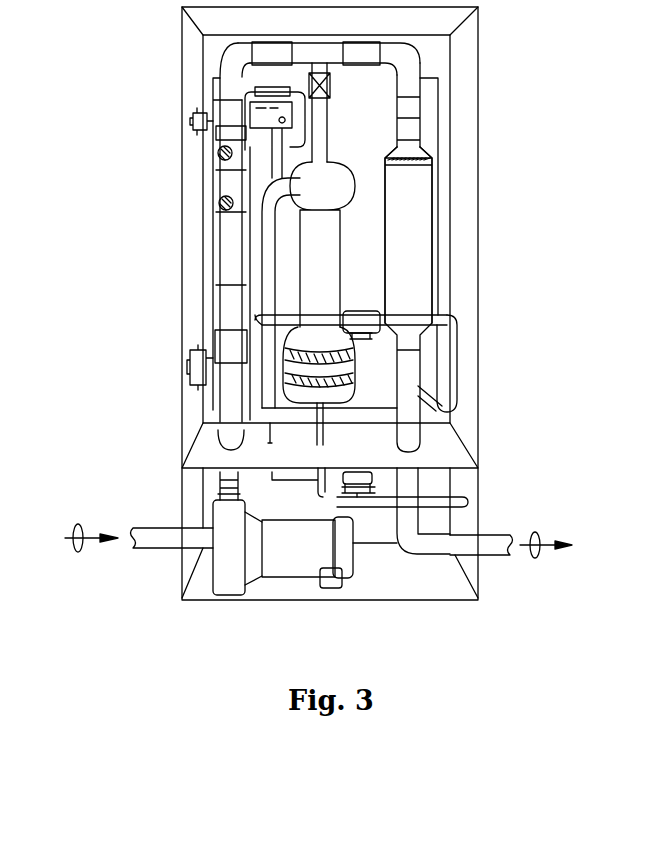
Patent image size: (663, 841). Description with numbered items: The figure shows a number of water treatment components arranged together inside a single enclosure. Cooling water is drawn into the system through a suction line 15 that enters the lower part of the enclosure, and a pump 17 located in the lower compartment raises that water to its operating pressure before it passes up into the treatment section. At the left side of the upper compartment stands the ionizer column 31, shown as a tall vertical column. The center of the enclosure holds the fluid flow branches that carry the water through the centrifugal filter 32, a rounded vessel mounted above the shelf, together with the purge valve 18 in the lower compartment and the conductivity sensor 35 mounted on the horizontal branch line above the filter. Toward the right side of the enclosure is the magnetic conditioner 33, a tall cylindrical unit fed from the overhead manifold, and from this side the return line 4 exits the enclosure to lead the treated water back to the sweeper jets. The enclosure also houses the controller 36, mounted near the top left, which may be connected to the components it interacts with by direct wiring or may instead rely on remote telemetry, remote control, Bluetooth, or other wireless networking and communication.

The return line 4 is at (537, 532).
The suction line 15 is at (75, 523).
The pump 17 is at (283, 563).
The purge valve 18 is at (363, 500).
The ionizer column 31 is at (227, 203).
The centrifugal filter 32 is at (358, 410).
The magnetic conditioner 33 is at (420, 215).
The conductivity sensor 35 is at (365, 318).
The controller 36 is at (233, 108).